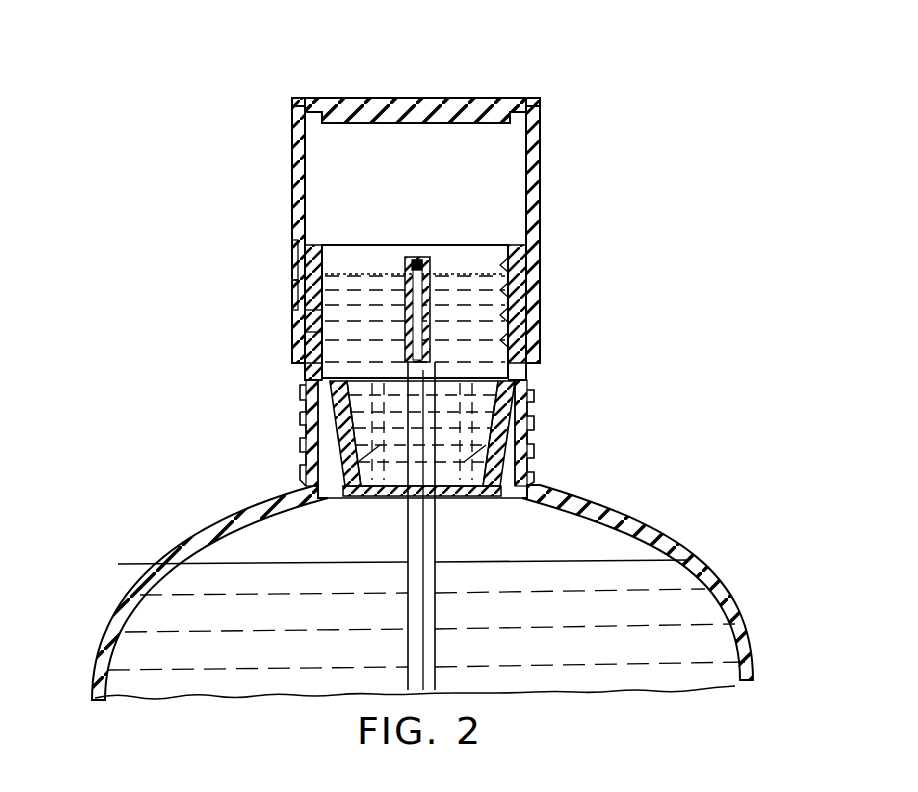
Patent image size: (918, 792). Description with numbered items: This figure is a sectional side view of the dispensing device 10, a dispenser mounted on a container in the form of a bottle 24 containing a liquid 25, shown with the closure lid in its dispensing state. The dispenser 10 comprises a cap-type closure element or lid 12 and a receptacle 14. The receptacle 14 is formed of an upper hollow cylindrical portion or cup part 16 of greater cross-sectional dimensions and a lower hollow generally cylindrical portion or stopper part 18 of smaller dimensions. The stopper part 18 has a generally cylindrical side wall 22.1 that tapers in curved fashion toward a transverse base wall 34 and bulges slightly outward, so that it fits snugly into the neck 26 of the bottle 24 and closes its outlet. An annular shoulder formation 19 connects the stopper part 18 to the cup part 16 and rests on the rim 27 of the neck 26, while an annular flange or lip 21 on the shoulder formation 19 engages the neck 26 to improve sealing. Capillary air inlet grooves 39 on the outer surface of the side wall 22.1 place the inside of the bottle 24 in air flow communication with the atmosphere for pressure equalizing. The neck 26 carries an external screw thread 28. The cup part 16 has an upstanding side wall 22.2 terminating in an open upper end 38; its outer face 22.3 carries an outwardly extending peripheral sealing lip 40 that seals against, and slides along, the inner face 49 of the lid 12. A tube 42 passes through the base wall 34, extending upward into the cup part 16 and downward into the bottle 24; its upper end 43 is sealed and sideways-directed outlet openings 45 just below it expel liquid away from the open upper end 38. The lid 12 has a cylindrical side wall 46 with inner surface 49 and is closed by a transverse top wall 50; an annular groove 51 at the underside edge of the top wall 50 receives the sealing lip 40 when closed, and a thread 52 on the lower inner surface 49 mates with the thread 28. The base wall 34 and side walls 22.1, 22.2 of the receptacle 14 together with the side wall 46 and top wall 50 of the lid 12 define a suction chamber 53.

The dispensing device 10 is at (648, 162).
The cap-type closure element or lid 12 is at (560, 187).
The receptacle 14 is at (532, 373).
The upper hollow cylindrical portion (cup part) 16 is at (515, 302).
The lower hollow generally cylindrical portion (stopper part) 18 is at (512, 476).
The annular shoulder formation 19 is at (308, 318).
The annular flange or lip 21 is at (536, 388).
The side wall of stopper part 22.1 is at (540, 437).
The side wall of cup part 22.2 is at (295, 281).
The outer face of cup side wall 22.3 is at (293, 268).
The container (bottle) 24 is at (655, 512).
The liquid 25 is at (672, 668).
The neck 26 is at (300, 446).
The rim 27 is at (305, 340).
The external screw thread 28 is at (305, 418).
The transverse base wall 34 is at (450, 494).
The open upper end (open mouth) 38 is at (473, 245).
The grooves (capillary air inlet means) 39 is at (345, 494).
The sealing lip 40 is at (325, 245).
The tube (conduit) 42 is at (438, 652).
The upper end of tube 43 is at (430, 257).
The outlet openings 45 is at (411, 262).
The cylindrical side wall of lid 46 is at (538, 212).
The inner face (inner surface) of lid side wall 49 is at (524, 165).
The transverse top wall 50 is at (475, 98).
The annular groove 51 is at (308, 118).
The thread 52 is at (536, 294).
The suction chamber 53 is at (413, 150).